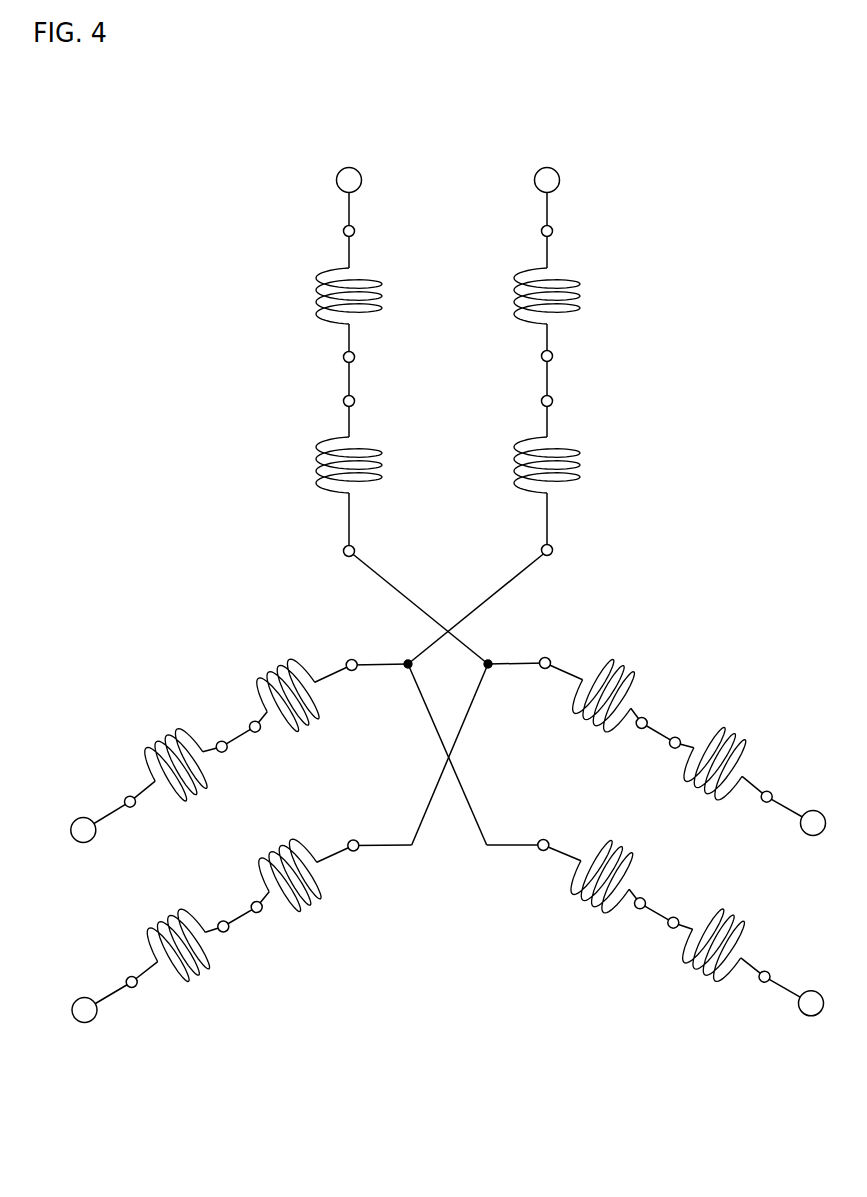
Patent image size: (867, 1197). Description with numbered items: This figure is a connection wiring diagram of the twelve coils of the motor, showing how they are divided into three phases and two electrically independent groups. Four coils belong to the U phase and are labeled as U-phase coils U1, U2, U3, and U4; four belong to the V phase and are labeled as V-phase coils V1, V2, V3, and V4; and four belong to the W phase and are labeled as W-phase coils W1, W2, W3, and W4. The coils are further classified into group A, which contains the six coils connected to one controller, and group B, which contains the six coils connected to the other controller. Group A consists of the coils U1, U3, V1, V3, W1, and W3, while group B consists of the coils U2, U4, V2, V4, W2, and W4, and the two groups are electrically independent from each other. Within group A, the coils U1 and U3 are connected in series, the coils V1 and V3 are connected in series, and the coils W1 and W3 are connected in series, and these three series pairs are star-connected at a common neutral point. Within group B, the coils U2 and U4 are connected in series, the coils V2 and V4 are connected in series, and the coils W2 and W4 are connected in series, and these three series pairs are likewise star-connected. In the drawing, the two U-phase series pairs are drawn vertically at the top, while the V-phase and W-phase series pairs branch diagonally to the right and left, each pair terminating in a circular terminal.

The U-phase coil U1 is at (327, 296).
The U-phase coil U2 is at (566, 296).
The U-phase coil U3 is at (327, 465).
The U-phase coil U4 is at (567, 465).
The V-phase coil V1 is at (718, 753).
The V-phase coil V2 is at (710, 954).
The V-phase coil V3 is at (607, 683).
The V-phase coil V4 is at (600, 886).
The W-phase coil W1 is at (184, 958).
The W-phase coil W2 is at (176, 756).
The W-phase coil W3 is at (296, 890).
The W-phase coil W4 is at (289, 688).